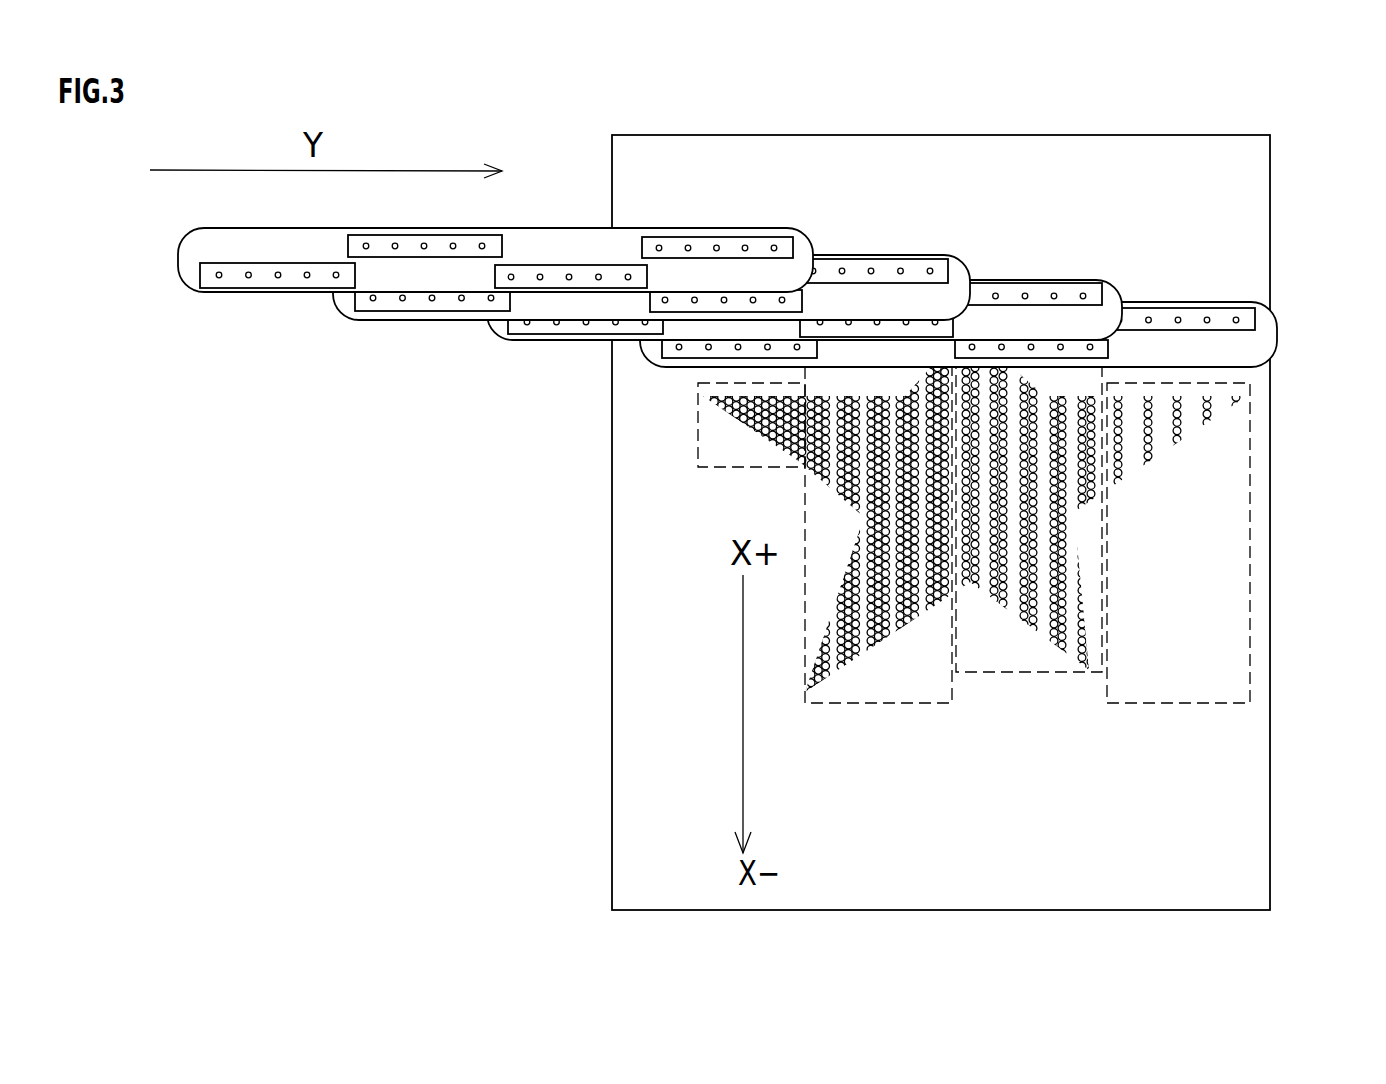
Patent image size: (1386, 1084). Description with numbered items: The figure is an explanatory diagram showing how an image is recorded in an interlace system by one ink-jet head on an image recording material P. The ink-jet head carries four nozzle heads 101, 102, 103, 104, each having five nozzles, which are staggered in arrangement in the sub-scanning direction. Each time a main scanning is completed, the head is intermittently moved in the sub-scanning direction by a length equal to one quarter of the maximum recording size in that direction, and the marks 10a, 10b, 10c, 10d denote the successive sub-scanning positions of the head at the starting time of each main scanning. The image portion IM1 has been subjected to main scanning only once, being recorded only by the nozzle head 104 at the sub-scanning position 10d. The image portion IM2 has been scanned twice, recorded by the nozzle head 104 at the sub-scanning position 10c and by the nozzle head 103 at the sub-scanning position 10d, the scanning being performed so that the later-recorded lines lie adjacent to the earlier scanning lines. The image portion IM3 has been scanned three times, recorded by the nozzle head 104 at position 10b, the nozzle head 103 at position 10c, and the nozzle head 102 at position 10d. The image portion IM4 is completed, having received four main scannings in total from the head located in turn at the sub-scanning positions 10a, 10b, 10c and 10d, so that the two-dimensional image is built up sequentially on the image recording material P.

The sub-scanning position 10a is at (465, 288).
The sub-scanning position 10b is at (958, 272).
The sub-scanning position 10c is at (1112, 297).
The sub-scanning position 10d is at (1265, 325).
The nozzle head 101 is at (268, 278).
The nozzle head 102 is at (412, 244).
The nozzle head 103 is at (527, 282).
The nozzle head 104 is at (732, 243).
The image portion IM1 is at (1252, 462).
The image portion IM2 is at (1030, 672).
The image portion IM3 is at (863, 703).
The image portion IM4 is at (733, 467).
The image recording material P is at (1247, 732).